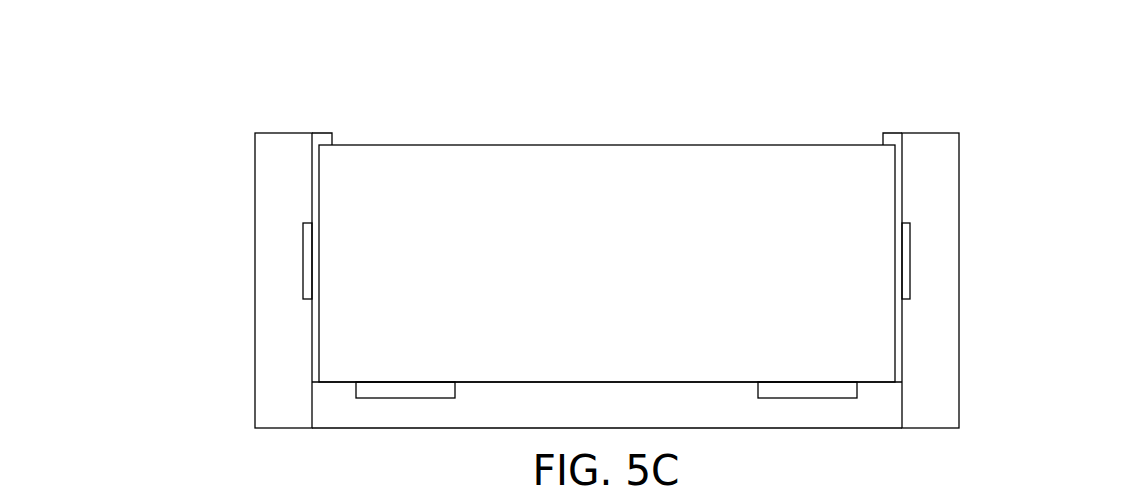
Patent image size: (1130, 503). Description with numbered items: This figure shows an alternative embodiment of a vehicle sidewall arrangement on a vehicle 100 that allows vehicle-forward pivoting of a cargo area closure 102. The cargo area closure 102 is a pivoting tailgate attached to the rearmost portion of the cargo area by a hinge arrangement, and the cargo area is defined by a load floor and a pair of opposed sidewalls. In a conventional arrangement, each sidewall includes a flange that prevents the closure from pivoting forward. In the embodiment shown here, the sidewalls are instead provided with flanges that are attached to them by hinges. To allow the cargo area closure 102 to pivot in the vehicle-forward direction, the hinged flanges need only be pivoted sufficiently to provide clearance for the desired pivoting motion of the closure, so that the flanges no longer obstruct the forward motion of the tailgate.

The vehicle 100 is at (629, 271).
The stowable cargo area closure 102 is at (578, 277).